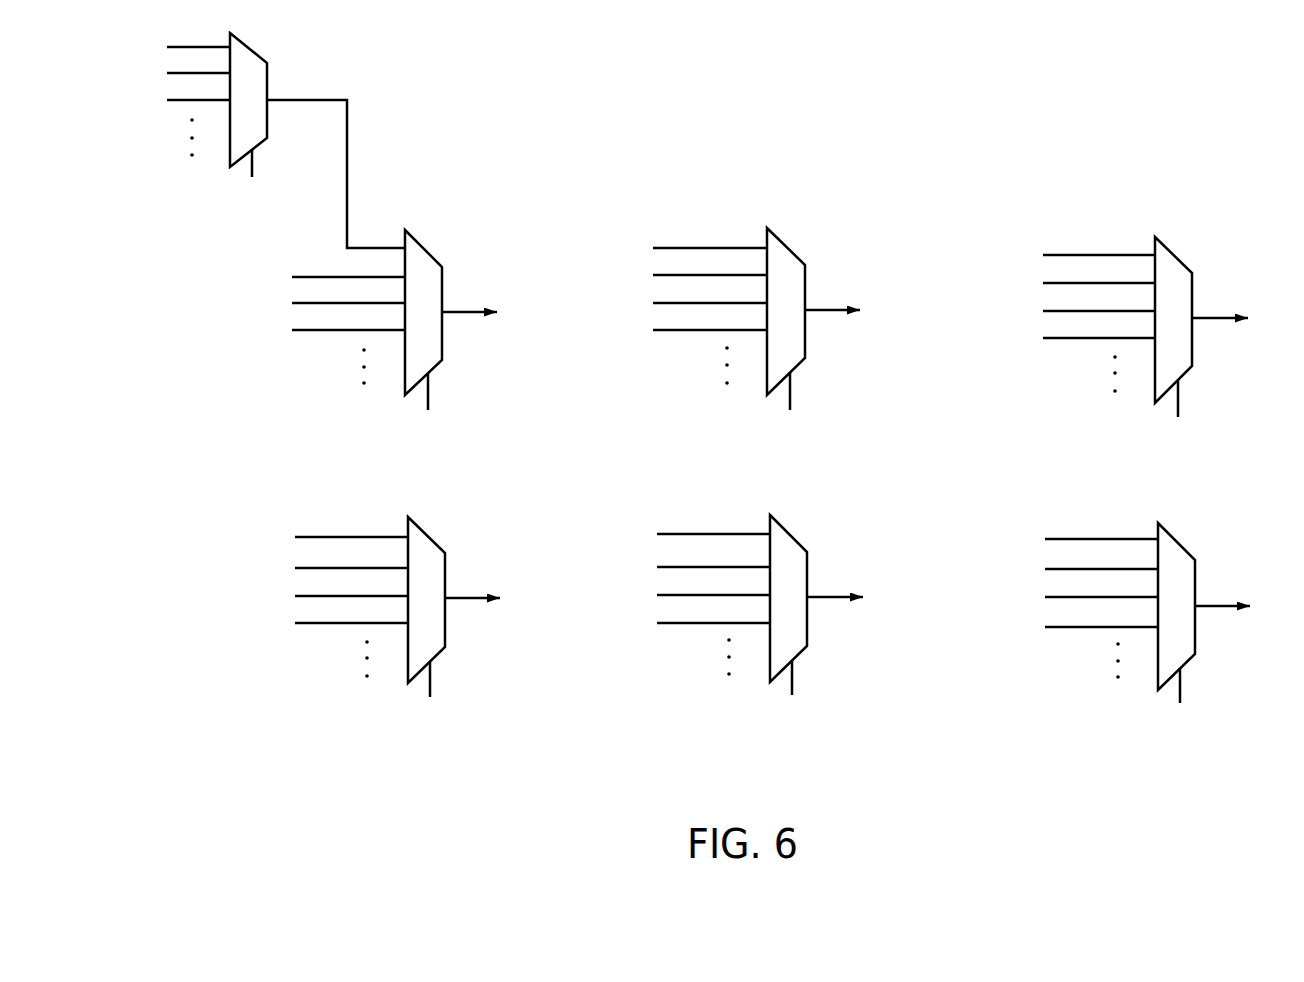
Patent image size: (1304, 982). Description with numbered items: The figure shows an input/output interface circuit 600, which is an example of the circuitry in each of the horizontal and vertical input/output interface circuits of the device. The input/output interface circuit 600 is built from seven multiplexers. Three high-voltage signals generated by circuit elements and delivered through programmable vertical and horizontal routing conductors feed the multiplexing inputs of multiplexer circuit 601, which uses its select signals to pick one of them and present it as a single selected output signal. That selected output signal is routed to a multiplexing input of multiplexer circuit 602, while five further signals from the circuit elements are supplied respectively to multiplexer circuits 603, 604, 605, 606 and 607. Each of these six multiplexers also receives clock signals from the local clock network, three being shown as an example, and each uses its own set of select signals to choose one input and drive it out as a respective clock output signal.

The input/output interface circuit 600 is at (896, 56).
The multiplexer circuit 601 is at (253, 52).
The multiplexer circuit 602 is at (430, 252).
The multiplexer circuit 603 is at (791, 250).
The multiplexer circuit 604 is at (1179, 259).
The multiplexer circuit 605 is at (431, 539).
The multiplexer circuit 606 is at (794, 537).
The multiplexer circuit 607 is at (1181, 545).